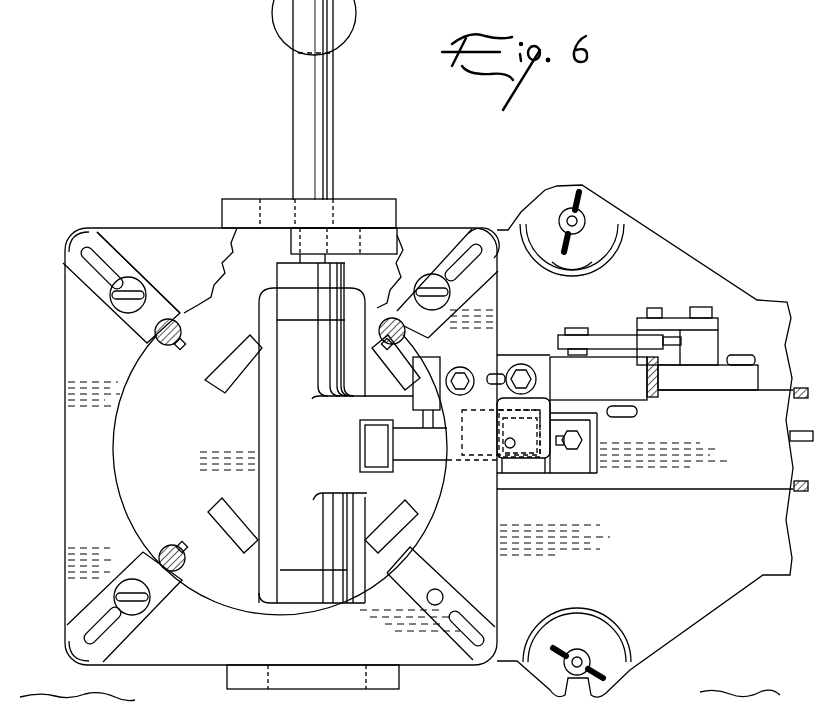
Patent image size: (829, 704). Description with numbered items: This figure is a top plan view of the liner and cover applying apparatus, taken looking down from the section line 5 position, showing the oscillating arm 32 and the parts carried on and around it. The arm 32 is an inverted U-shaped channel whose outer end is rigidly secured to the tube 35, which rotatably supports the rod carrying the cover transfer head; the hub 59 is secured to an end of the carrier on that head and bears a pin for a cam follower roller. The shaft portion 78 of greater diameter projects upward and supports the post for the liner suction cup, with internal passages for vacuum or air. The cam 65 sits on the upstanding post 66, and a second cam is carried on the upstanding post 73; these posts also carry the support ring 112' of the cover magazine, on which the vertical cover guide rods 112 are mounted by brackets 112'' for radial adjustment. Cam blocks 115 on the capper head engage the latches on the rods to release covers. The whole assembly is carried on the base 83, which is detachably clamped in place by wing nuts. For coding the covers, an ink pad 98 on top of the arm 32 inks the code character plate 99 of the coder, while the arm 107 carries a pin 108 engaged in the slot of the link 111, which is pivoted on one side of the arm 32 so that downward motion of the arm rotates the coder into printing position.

The shaft portion 78 is at (333, 103).
The upstanding post 66 is at (356, 206).
The cam 65 is at (386, 238).
The tube 35 is at (277, 421).
The hub 59 is at (287, 587).
The code character plate 99 is at (362, 462).
The cam block 115 is at (216, 517).
The cover guide rod 112 is at (283, 440).
The support ring 112' is at (121, 265).
The bracket 112'' is at (154, 272).
The upstanding post 73 is at (399, 681).
The base 83 is at (740, 574).
The arm 32 is at (611, 478).
The ink pad 98 is at (522, 463).
The arm 107 is at (604, 335).
The link 111 is at (676, 320).
The pin 108 is at (652, 308).
The section line 5 is at (45, 460).